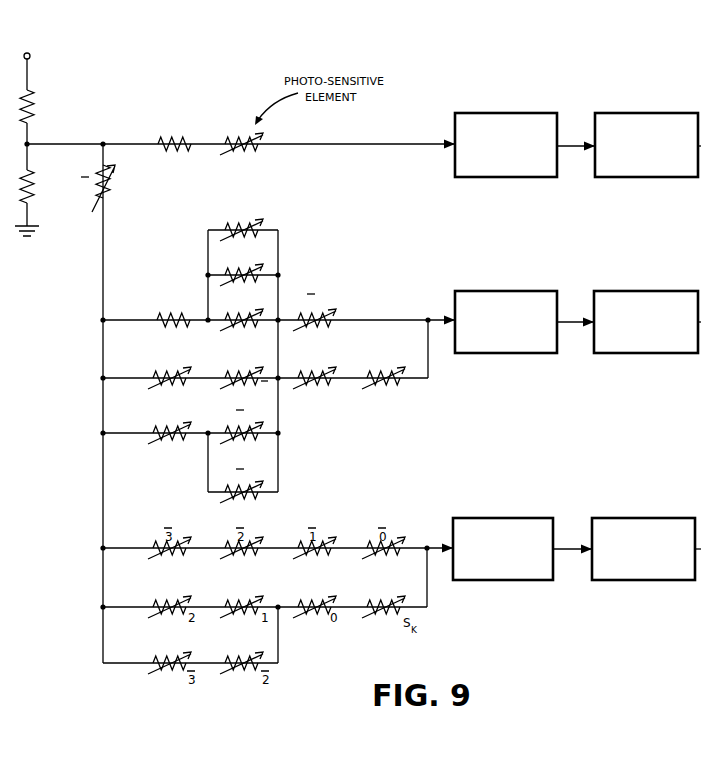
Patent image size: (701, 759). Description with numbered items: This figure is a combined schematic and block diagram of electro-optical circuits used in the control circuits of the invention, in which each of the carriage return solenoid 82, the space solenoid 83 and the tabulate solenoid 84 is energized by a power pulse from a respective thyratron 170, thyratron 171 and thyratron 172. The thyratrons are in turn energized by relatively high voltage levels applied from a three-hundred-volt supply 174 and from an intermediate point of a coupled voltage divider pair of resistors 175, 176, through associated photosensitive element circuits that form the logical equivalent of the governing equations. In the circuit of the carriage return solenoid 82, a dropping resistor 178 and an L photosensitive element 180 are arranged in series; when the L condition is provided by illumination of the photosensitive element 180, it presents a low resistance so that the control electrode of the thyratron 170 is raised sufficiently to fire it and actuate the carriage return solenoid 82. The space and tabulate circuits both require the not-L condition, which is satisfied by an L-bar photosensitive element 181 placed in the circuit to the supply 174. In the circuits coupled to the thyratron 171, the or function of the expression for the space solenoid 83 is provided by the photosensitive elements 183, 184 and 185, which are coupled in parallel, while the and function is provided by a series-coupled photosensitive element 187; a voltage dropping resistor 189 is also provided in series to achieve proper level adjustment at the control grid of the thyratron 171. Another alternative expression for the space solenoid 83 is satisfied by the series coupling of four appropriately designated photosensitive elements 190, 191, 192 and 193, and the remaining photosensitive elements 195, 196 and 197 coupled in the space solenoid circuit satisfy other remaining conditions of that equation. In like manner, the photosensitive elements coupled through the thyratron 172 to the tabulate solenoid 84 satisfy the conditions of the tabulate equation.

The +300 volt supply 174 is at (31, 59).
The voltage divider resistor 175 is at (37, 108).
The voltage divider resistor 176 is at (35, 178).
The dropping resistor 178 is at (178, 137).
The L photosensitive element 180 is at (240, 150).
The L-bar photosensitive element 181 is at (112, 183).
The photosensitive element 183 is at (256, 226).
The photosensitive element 184 is at (262, 271).
The photosensitive element 185 is at (262, 312).
The series-coupled photosensitive element 187 is at (318, 312).
The voltage dropping resistor 189 is at (178, 307).
The photosensitive element 190 is at (178, 370).
The photosensitive element 191 is at (246, 370).
The photosensitive element 192 is at (320, 370).
The photosensitive element 193 is at (390, 370).
The photosensitive element 195 is at (178, 443).
The photosensitive element 196 is at (258, 441).
The photosensitive element 197 is at (262, 500).
The thyratron 170 is at (507, 112).
The thyratron 171 is at (511, 290).
The thyratron 172 is at (514, 517).
The carriage return solenoid 82 is at (648, 112).
The space solenoid 83 is at (641, 290).
The tabulate solenoid 84 is at (650, 517).